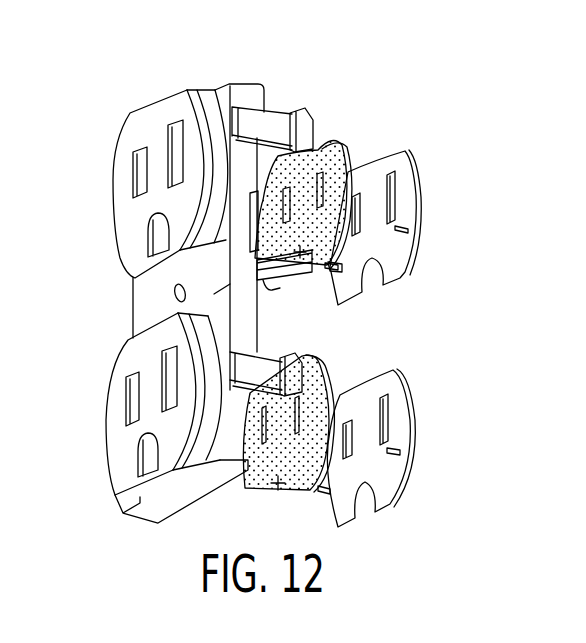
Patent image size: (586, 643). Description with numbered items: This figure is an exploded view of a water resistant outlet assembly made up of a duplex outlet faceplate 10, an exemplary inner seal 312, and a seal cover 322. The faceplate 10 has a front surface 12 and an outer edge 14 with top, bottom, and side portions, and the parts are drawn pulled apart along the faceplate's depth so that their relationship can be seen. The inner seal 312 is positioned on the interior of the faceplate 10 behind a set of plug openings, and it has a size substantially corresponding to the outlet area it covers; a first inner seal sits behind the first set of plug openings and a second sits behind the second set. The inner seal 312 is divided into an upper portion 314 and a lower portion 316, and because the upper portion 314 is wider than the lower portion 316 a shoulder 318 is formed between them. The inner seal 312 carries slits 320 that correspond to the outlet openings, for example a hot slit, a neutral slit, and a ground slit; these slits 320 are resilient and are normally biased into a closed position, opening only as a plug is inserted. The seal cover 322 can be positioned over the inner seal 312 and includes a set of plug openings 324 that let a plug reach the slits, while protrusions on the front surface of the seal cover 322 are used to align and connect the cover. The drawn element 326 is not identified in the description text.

The duplex outlet faceplate 10 is at (151, 120).
The front surface 12 is at (123, 212).
The outer edge 14 is at (237, 100).
The inner seal 312 is at (313, 112).
The upper portion 314 is at (330, 132).
The lower portion 316 is at (335, 266).
The shoulder 318 is at (350, 205).
The slits 320 is at (322, 172).
The seal cover 322 is at (413, 432).
The plug openings 324 is at (387, 412).
The tab 326 is at (402, 449).